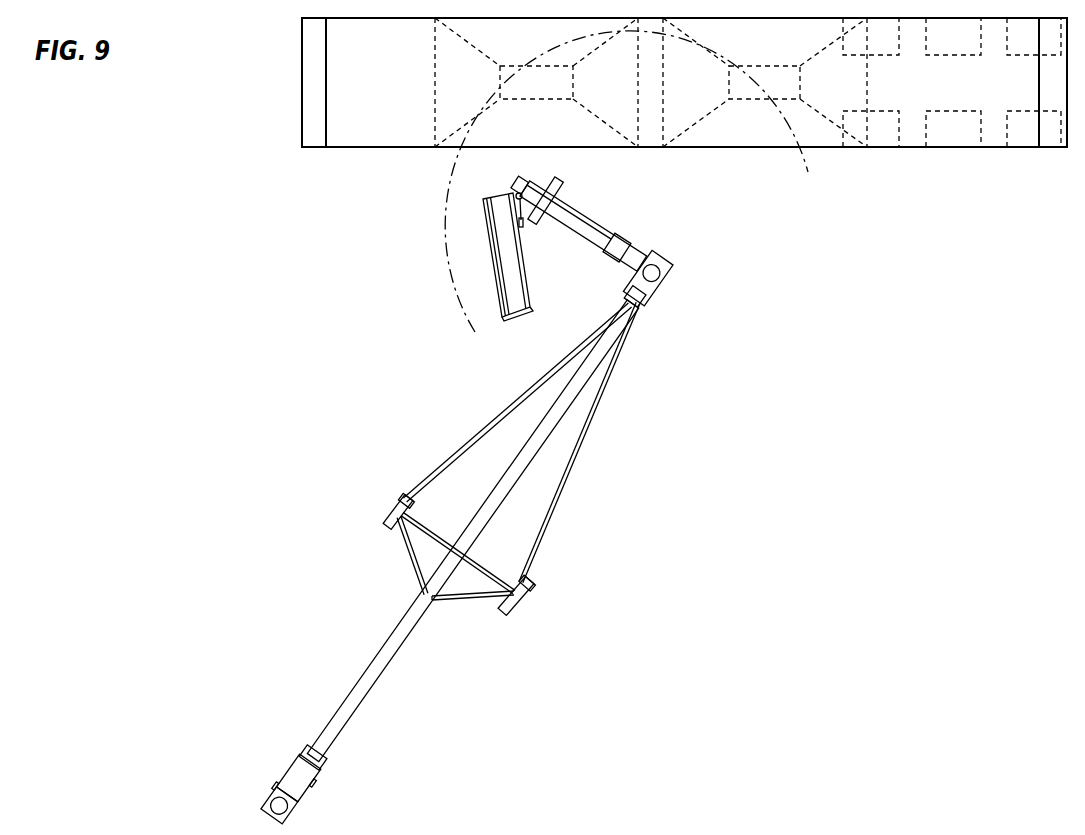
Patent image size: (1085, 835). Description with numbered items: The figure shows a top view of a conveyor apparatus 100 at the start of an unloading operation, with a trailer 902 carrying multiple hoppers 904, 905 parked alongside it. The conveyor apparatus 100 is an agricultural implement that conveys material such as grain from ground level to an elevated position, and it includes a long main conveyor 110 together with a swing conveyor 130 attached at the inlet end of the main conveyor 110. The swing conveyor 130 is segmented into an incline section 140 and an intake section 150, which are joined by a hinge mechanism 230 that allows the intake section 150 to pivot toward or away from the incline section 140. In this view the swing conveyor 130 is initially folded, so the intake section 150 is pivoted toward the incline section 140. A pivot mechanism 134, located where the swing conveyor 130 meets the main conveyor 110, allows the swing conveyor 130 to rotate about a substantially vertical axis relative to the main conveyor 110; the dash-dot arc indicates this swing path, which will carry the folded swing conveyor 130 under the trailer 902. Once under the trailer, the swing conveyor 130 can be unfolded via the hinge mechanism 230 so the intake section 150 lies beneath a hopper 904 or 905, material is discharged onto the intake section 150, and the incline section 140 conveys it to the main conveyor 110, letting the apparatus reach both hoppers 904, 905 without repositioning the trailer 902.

The conveyor apparatus 100 is at (530, 428).
The main conveyor 110 is at (389, 662).
The swing conveyor 130 is at (593, 181).
The pivot mechanism 134 is at (668, 280).
The incline section 140 is at (605, 231).
The intake section 150 is at (525, 272).
The hinge mechanism 230 is at (517, 194).
The trailer 902 is at (652, 82).
The hopper 904 is at (550, 46).
The hopper 905 is at (775, 46).